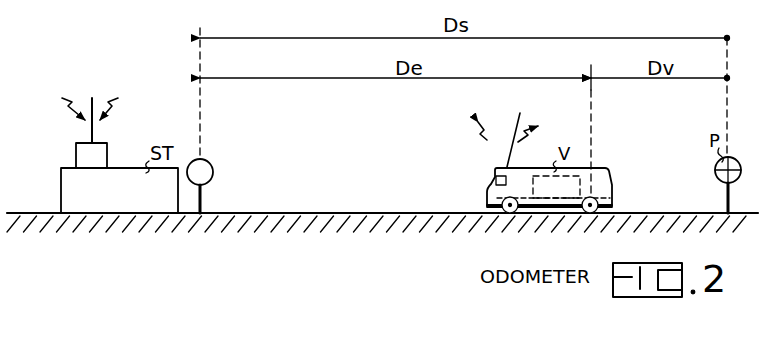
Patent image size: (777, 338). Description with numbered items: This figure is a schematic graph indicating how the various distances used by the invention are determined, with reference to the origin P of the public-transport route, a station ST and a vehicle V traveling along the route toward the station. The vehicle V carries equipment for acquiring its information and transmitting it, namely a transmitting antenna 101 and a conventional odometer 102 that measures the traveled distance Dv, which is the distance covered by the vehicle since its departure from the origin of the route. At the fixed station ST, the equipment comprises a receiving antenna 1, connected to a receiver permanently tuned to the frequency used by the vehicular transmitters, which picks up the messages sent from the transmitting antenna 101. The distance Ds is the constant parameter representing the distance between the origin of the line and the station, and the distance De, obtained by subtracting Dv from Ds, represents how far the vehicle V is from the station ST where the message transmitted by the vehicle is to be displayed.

The receiving antenna 1 is at (92, 98).
The transmitting antenna 101 is at (520, 120).
The odometer 102 is at (537, 207).